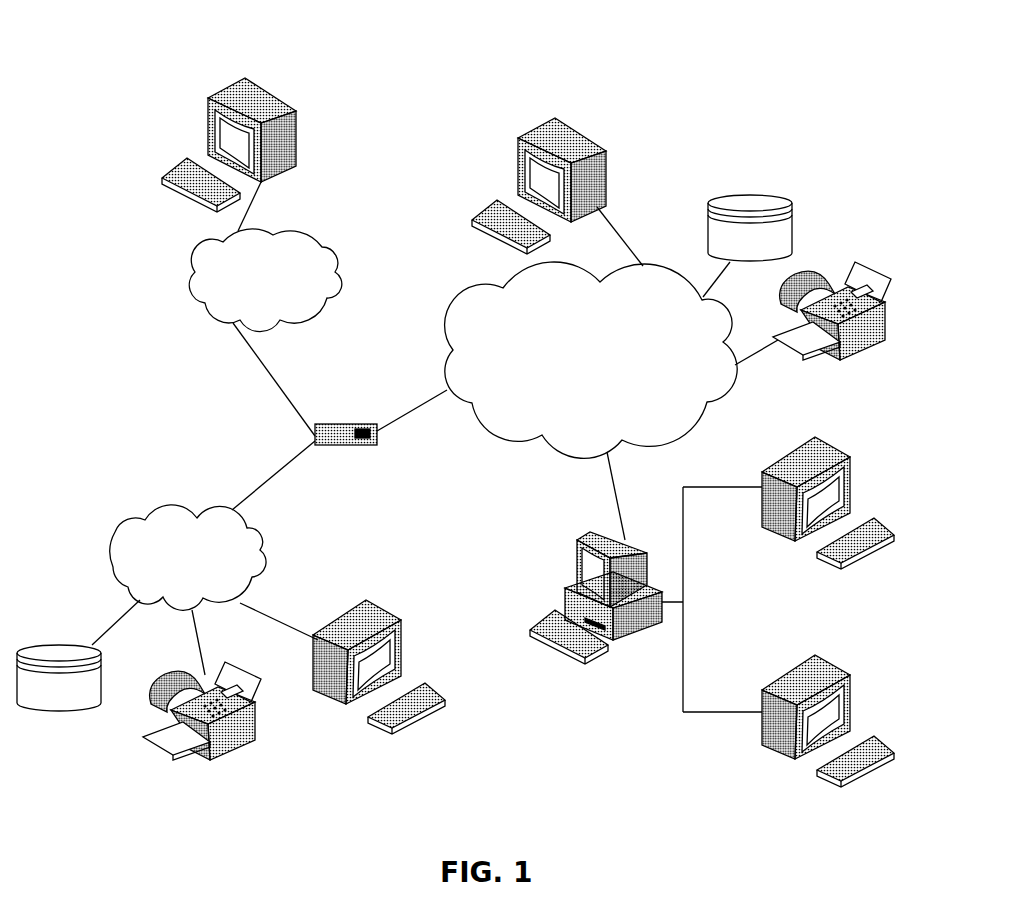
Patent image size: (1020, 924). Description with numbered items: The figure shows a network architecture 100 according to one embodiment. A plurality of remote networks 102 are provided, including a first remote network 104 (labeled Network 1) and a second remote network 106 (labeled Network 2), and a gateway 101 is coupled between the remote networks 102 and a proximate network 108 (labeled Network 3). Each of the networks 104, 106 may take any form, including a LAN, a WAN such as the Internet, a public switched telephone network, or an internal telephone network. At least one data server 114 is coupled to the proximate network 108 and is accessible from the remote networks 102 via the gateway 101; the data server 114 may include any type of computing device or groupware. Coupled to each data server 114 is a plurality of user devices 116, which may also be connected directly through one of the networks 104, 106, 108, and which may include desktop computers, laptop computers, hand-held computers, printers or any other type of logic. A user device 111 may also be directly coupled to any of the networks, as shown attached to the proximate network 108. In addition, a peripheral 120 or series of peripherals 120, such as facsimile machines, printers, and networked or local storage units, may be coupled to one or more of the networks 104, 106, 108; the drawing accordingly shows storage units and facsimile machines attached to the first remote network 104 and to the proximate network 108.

The architecture 100 is at (135, 60).
The gateway 101 is at (330, 423).
The remote networks 102 is at (165, 345).
The first remote network 104 is at (115, 532).
The second remote network 106 is at (337, 253).
The proximate network 108 is at (703, 424).
The user device 111 is at (605, 153).
The data server 114 is at (575, 553).
The user devices 116 is at (297, 119).
The peripheral 120 is at (792, 203).